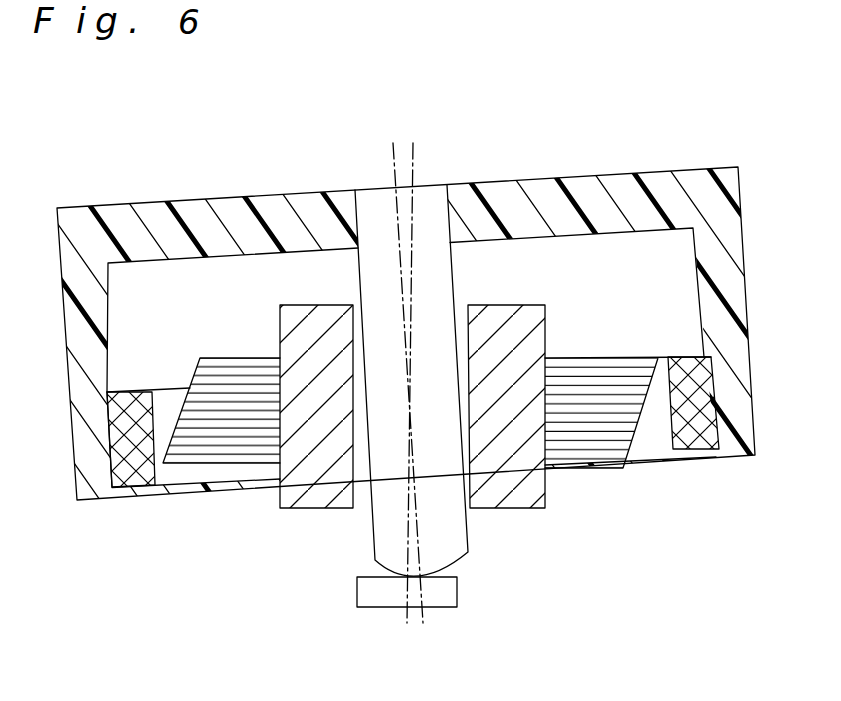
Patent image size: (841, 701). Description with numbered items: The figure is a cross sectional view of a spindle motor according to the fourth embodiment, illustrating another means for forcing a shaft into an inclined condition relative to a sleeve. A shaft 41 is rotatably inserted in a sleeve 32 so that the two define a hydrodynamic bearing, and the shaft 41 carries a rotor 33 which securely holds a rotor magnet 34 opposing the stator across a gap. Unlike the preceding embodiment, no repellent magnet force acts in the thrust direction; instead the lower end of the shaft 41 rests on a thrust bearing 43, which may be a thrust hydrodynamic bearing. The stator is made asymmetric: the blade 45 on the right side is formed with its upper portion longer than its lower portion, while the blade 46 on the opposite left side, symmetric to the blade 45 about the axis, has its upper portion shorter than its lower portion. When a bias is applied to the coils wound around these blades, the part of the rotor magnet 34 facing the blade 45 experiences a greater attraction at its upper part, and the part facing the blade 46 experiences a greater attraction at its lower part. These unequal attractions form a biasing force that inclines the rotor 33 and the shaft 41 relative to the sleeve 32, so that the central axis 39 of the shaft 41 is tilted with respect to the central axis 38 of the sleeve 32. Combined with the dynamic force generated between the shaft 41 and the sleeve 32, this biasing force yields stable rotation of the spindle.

The sleeve 32 is at (505, 317).
The rotor 33 is at (608, 186).
The rotor magnet 34 is at (692, 443).
The central axis of the sleeve 38 is at (397, 615).
The central axis of the shaft 39 is at (425, 613).
The shaft 41 is at (432, 200).
The thrust bearing 43 is at (372, 590).
The blade 45 is at (592, 442).
The blade 46 is at (232, 440).